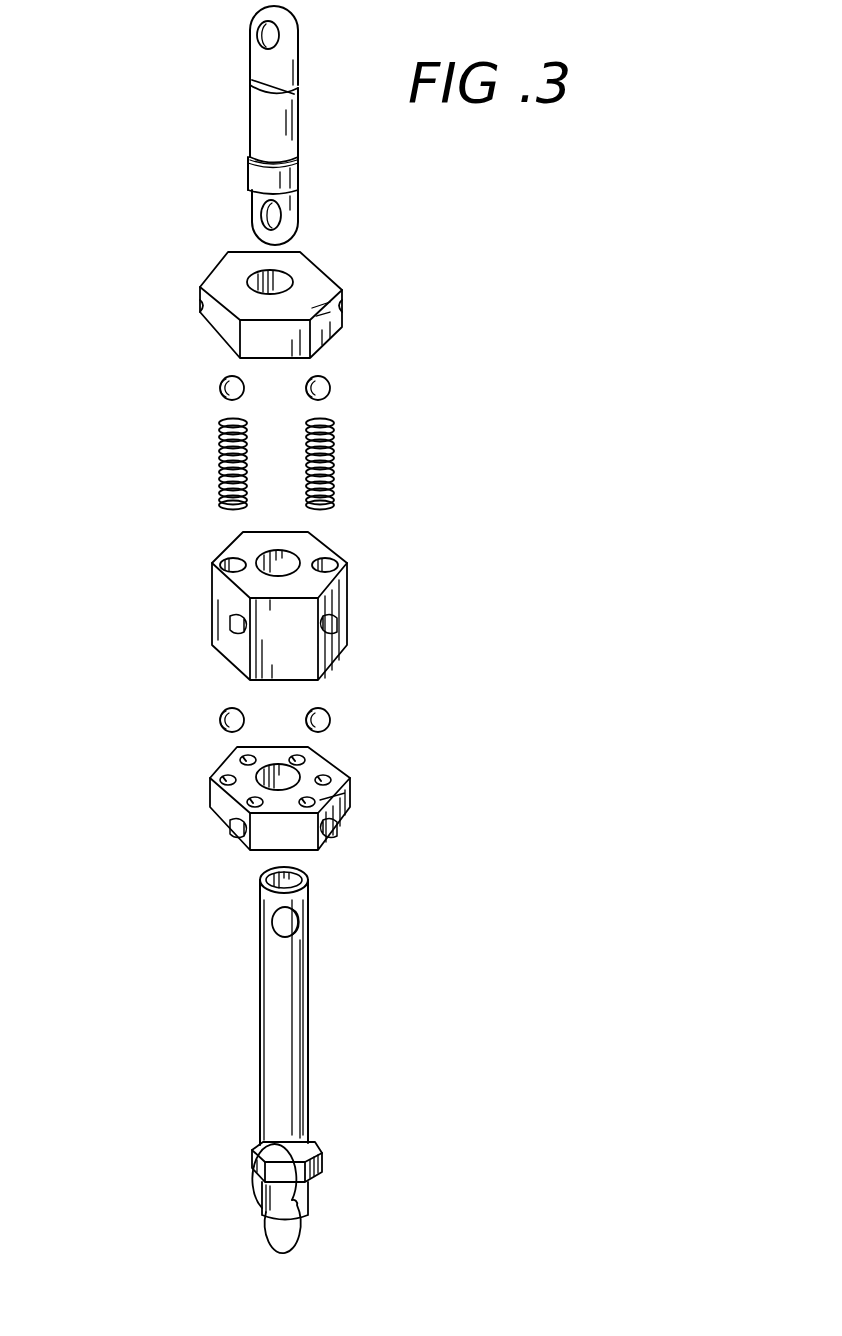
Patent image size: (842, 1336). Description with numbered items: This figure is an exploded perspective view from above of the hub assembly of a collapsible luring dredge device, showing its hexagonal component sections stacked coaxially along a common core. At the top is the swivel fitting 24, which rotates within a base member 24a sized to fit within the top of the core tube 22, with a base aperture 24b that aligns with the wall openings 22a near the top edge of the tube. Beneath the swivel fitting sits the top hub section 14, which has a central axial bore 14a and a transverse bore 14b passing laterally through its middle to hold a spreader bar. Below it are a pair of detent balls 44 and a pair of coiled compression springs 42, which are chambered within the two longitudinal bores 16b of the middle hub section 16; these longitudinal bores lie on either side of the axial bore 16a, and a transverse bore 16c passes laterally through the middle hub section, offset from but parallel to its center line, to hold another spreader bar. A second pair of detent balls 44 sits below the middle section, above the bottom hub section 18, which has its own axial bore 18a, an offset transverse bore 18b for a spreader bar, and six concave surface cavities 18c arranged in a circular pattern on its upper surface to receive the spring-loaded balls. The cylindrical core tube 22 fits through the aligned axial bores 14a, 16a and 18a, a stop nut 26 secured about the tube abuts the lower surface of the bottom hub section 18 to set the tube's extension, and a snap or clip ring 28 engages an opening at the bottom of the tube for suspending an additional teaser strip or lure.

The top hub section 14 is at (328, 340).
The axial bore 14a is at (292, 277).
The transverse bore 14b is at (200, 310).
The middle hub section 16 is at (353, 610).
The axial bore 16a is at (263, 557).
The longitudinal bores 16b is at (325, 553).
The transverse bore 16c is at (230, 618).
The bottom hub section 18 is at (352, 817).
The axial bore 18a is at (248, 760).
The transverse bore 18b is at (237, 825).
The concave surface cavities 18c is at (333, 778).
The core tube 22 is at (310, 1100).
The wall openings 22a is at (305, 923).
The swivel fitting 24 is at (243, 56).
The base member 24a is at (247, 180).
The base aperture 24b is at (250, 212).
The stop nut 26 is at (330, 1157).
The snap or clip ring 28 is at (310, 1235).
The coiled compression spring 42 is at (333, 473).
The detent balls 44 is at (332, 388).